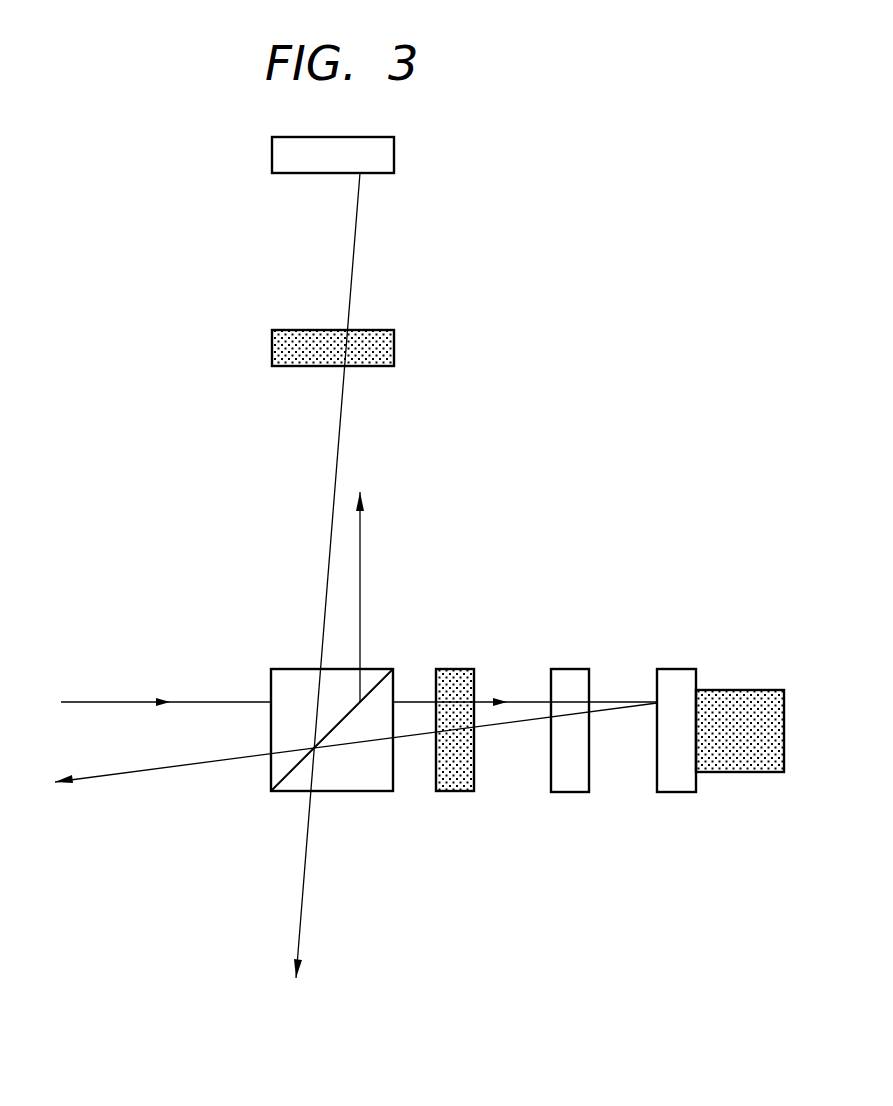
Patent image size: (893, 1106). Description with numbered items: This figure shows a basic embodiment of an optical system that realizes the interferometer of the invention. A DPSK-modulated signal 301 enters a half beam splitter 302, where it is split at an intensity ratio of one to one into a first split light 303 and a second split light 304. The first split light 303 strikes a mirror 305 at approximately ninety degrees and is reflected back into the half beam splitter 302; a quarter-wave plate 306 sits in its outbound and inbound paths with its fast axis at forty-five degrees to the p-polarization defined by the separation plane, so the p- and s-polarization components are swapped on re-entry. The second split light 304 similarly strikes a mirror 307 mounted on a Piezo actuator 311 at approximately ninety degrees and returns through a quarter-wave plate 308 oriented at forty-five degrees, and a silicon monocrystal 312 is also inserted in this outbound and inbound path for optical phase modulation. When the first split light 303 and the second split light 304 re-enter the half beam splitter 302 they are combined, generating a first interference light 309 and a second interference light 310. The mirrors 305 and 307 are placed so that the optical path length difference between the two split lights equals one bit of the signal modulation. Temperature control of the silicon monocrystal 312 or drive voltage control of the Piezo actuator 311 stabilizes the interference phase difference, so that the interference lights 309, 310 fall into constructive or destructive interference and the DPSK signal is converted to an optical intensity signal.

The modulated signal 301 is at (118, 700).
The half beam splitter 302 is at (283, 668).
The first split light 303 is at (362, 443).
The second split light 304 is at (414, 700).
The mirror 305 is at (396, 150).
The quarter-wave plate 306 is at (396, 345).
The mirror 307 is at (672, 793).
The quarter-wave plate 308 is at (450, 793).
The first interference light 309 is at (122, 775).
The second interference light 310 is at (298, 929).
The Piezo actuator 311 is at (744, 773).
The silicon monocrystal 312 is at (565, 793).